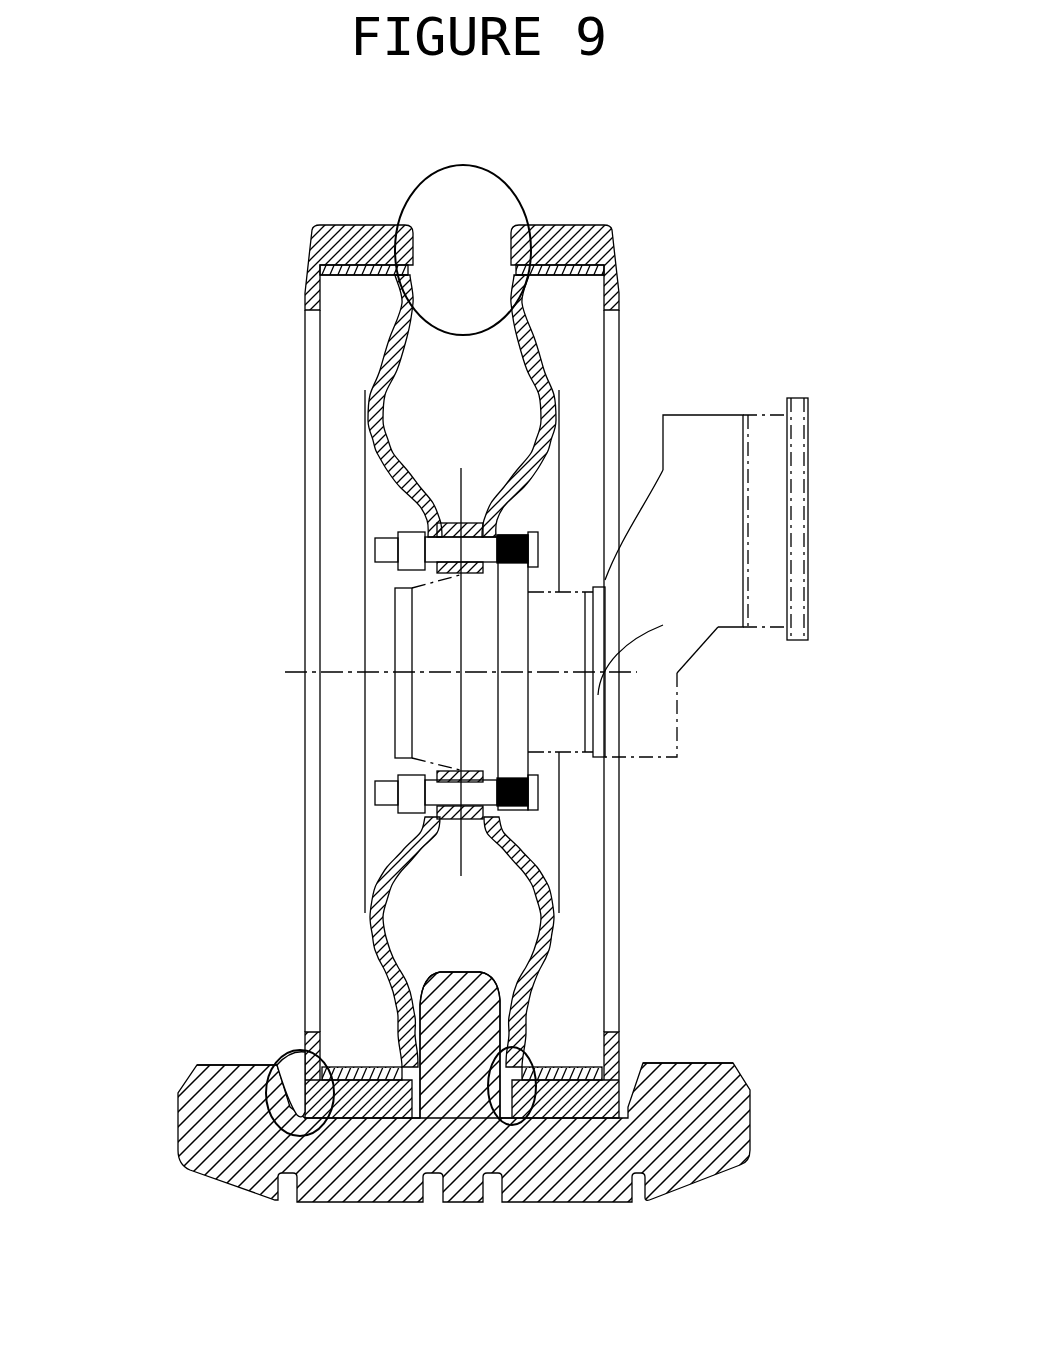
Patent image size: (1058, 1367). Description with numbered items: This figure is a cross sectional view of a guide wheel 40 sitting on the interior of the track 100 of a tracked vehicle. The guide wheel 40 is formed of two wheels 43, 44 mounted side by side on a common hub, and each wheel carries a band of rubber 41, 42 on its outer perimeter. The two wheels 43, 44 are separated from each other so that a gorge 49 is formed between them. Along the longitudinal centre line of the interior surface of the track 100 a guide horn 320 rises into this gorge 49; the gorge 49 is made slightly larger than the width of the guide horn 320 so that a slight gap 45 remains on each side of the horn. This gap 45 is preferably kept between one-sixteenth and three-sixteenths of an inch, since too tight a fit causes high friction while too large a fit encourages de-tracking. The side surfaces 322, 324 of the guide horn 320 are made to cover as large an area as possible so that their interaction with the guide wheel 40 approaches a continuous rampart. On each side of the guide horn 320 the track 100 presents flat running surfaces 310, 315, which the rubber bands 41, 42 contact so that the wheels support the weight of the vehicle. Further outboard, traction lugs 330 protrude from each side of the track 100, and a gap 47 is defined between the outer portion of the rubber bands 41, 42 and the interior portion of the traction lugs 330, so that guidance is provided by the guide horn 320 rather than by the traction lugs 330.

The guide wheel 40 is at (355, 352).
The rubber band 41 is at (335, 241).
The rubber band 42 is at (590, 219).
The wheel 43 is at (301, 487).
The wheel 44 is at (625, 363).
The gap 45 is at (483, 1128).
The gap 47 is at (282, 1040).
The gorge 49 is at (488, 164).
The track 100 is at (232, 1158).
The flat running surface 310 is at (356, 1123).
The flat running surface 315 is at (598, 1118).
The guide horn 320 is at (467, 1060).
The side surface 322 is at (510, 1000).
The side surface 324 is at (407, 1007).
The traction lug 330 is at (212, 1087).